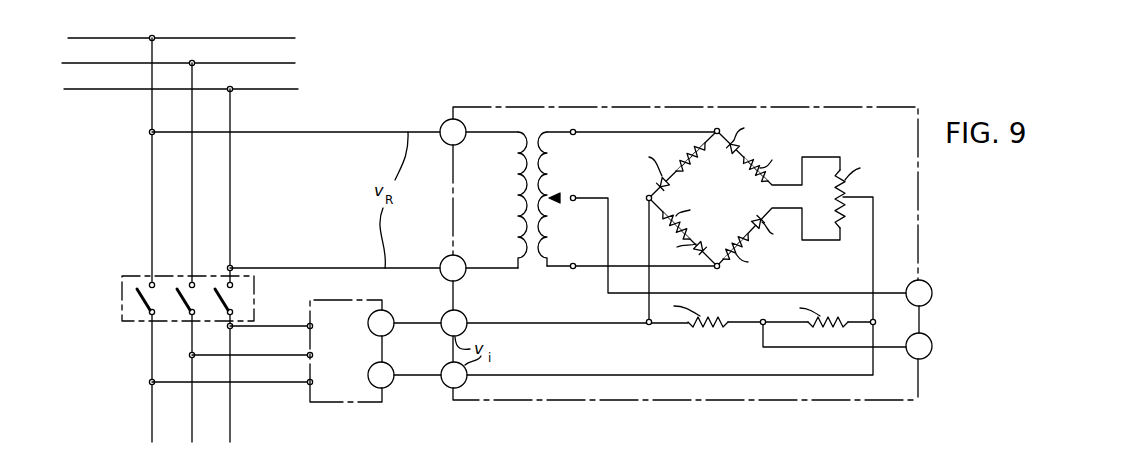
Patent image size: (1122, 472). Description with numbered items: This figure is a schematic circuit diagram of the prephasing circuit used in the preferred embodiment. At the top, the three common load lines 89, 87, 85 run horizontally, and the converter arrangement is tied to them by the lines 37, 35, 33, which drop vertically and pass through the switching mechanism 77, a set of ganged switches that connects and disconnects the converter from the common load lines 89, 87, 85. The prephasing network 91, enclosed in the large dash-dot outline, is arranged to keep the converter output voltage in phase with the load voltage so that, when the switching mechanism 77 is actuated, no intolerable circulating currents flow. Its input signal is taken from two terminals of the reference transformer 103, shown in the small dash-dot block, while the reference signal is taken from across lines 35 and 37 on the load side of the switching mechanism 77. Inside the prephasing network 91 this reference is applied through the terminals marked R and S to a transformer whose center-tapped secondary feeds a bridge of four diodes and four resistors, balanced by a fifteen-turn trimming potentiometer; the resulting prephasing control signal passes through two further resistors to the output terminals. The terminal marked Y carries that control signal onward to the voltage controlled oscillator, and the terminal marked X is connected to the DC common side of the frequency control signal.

The common load line 89 is at (68, 38).
The common load line 87 is at (62, 63).
The common load line 85 is at (64, 89).
The switching mechanism 77 is at (122, 298).
The line 37 is at (152, 412).
The line 35 is at (192, 422).
The line 33 is at (230, 422).
The prephasing network 91 is at (728, 107).
The reference transformer 103 is at (352, 402).